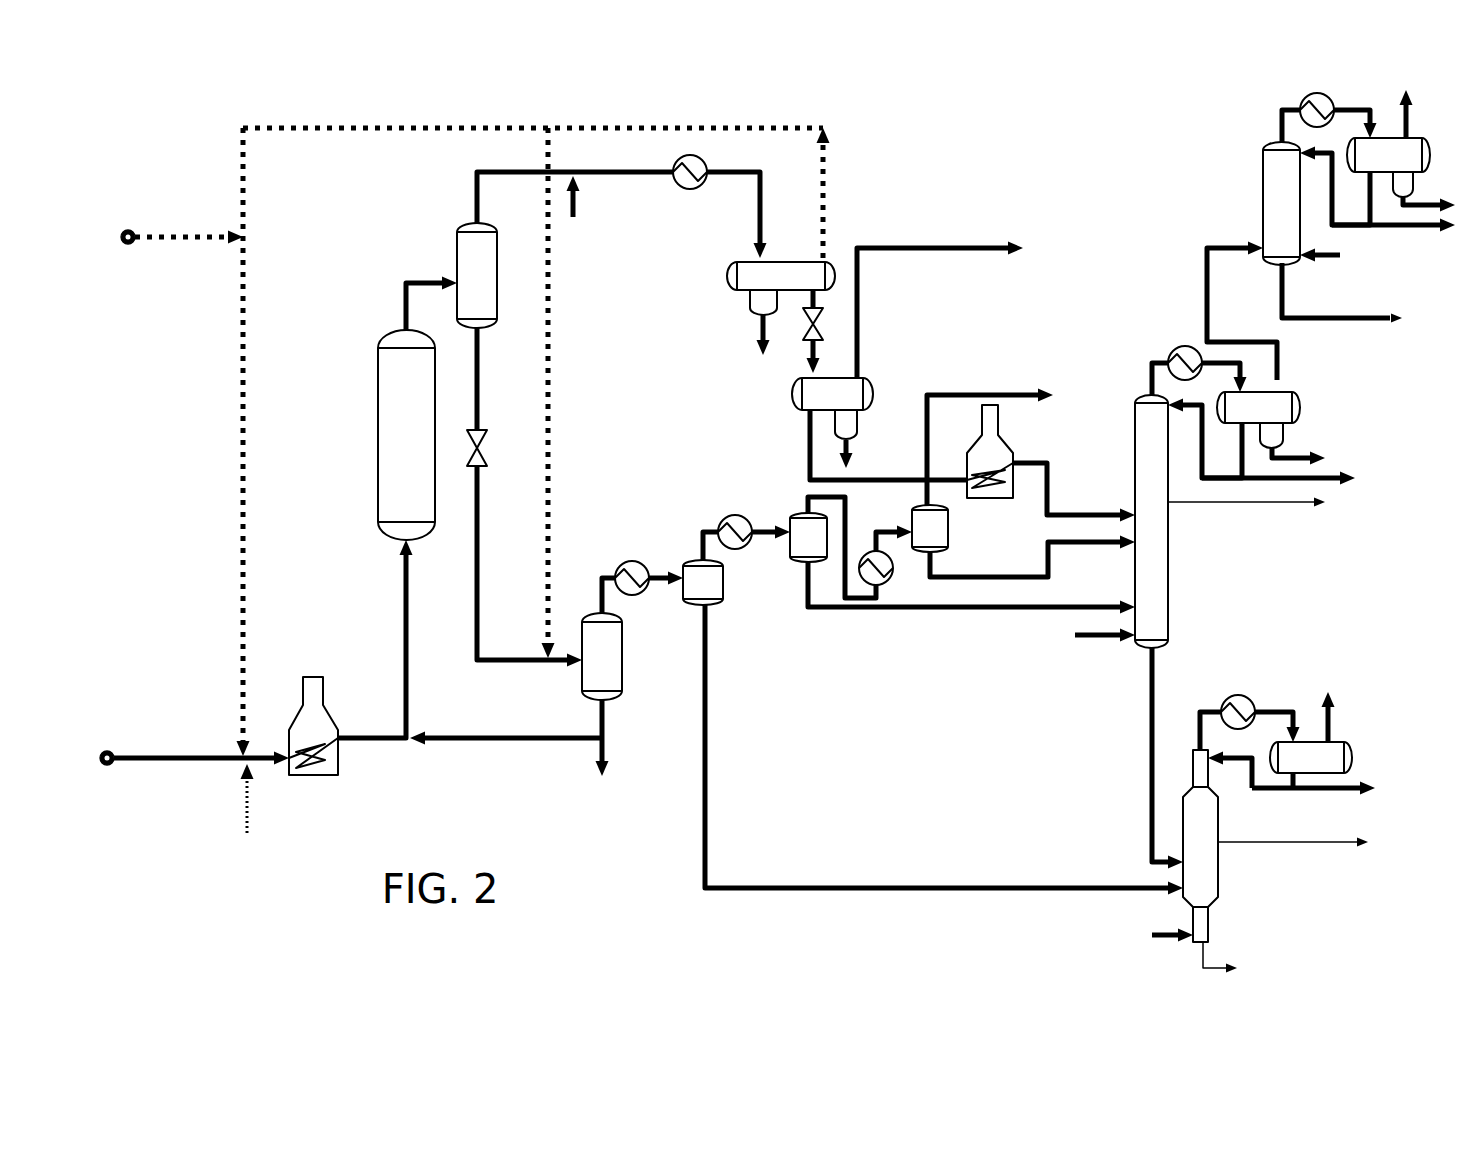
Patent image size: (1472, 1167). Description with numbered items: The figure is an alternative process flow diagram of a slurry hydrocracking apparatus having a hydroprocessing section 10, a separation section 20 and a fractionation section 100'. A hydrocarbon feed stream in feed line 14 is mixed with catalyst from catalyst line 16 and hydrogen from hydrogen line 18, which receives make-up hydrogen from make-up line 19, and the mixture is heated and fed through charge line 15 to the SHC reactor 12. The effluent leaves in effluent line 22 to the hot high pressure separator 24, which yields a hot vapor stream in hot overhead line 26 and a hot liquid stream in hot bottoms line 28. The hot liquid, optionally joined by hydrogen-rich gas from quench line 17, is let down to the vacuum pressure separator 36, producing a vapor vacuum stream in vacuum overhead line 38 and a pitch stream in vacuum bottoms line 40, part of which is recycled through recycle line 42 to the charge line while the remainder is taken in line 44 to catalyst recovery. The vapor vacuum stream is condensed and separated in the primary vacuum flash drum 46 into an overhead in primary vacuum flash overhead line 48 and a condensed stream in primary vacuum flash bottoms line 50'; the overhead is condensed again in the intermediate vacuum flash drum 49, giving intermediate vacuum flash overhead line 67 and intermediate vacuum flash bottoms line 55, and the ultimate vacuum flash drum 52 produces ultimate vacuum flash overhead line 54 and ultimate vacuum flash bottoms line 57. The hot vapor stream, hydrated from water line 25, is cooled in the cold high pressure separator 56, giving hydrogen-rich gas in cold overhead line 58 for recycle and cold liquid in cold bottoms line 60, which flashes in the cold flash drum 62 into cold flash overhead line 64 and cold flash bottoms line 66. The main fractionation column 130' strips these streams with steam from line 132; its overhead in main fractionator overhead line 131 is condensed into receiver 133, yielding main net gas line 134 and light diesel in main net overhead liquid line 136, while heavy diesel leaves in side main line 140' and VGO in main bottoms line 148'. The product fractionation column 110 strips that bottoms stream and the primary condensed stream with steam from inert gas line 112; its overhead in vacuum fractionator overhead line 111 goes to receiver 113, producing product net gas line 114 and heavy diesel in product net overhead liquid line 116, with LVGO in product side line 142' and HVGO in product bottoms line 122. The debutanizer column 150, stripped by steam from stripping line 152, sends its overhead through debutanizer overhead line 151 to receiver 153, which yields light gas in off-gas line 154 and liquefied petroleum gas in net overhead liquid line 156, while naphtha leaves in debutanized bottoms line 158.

The hydroprocessing section 10 is at (218, 328).
The SHC reactor 12 is at (380, 382).
The feed line 14 is at (216, 755).
The charge line 15 is at (403, 630).
The catalyst line 16 is at (250, 795).
The quench line 17 is at (552, 533).
The hydrogen line 18 is at (246, 430).
The make-up line 19 is at (200, 232).
The separation section 20 is at (592, 103).
The effluent line 22 is at (425, 280).
The hot high pressure separator 24 is at (500, 255).
The water line 25 is at (576, 212).
The hot overhead line 26 is at (684, 188).
The hot bottoms line 28 is at (482, 397).
The vacuum pressure separator 36 is at (624, 637).
The vacuum overhead line 38 is at (665, 586).
The vacuum bottoms line 40 is at (605, 722).
The recycle line 42 is at (550, 735).
The line 44 is at (607, 748).
The primary vacuum flash drum 46 is at (726, 575).
The primary vacuum flash overhead line 48 is at (702, 530).
The intermediate vacuum flash drum 49 is at (790, 515).
The primary vacuum flash bottoms line 50' is at (944, 750).
The ultimate vacuum flash drum 52 is at (950, 520).
The ultimate vacuum flash overhead line 54 is at (1003, 393).
The intermediate vacuum flash bottoms line 55 is at (835, 612).
The cold high pressure separator 56 is at (732, 270).
The ultimate vacuum flash bottoms line 57 is at (1030, 578).
The cold overhead line 58 is at (828, 205).
The cold bottoms line 60 is at (822, 300).
The cold flash drum 62 is at (793, 393).
The cold flash overhead line 64 is at (860, 308).
The cold flash bottoms line 66 is at (878, 478).
The intermediate vacuum flash overhead line 67 is at (850, 548).
The fractionation section 100' is at (1088, 164).
The product fractionation column 110 is at (1220, 828).
The vacuum fractionator overhead line 111 is at (1193, 722).
The inert gas line 112 is at (1163, 937).
The receiver 113 is at (1354, 750).
The product net gas line 114 is at (1322, 725).
The product net overhead liquid line 116 is at (1355, 778).
The product bottoms line 122 is at (1218, 960).
The main fractionation column 130' is at (1115, 521).
The main fractionator overhead line 131 is at (1150, 370).
The line 132 is at (1100, 642).
The receiver 133 is at (1300, 398).
The main net gas line 134 is at (1207, 292).
The main net overhead liquid line 136 is at (1340, 485).
The side main line 140' is at (1246, 519).
The product side line 142' is at (1297, 858).
The main bottoms line 148' is at (1141, 758).
The debutanizer column 150 is at (1263, 208).
The debutanizer overhead line 151 is at (1280, 122).
The stripping line 152 is at (1332, 262).
The receiver 153 is at (1433, 147).
The off-gas line 154 is at (1400, 120).
The net overhead liquid line 156 is at (1425, 230).
The debutanized bottoms line 158 is at (1313, 318).